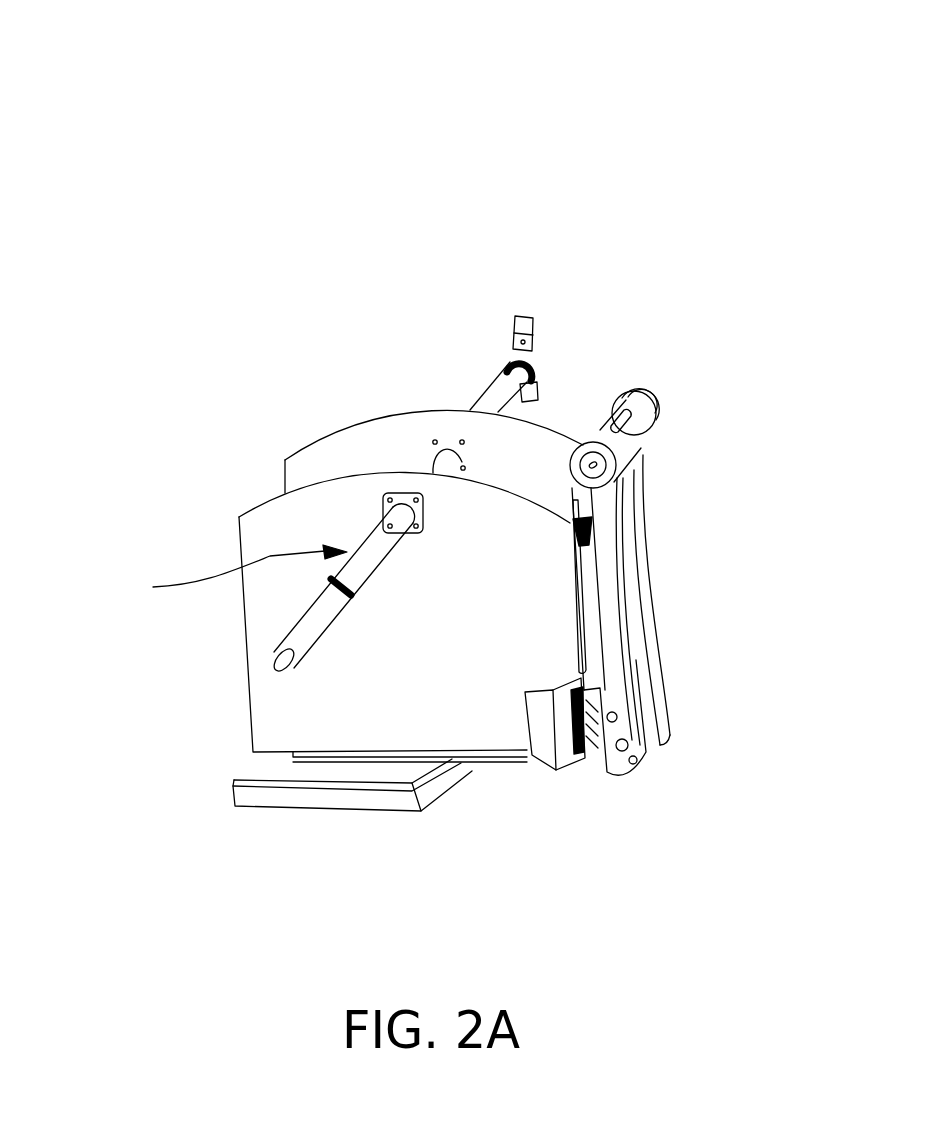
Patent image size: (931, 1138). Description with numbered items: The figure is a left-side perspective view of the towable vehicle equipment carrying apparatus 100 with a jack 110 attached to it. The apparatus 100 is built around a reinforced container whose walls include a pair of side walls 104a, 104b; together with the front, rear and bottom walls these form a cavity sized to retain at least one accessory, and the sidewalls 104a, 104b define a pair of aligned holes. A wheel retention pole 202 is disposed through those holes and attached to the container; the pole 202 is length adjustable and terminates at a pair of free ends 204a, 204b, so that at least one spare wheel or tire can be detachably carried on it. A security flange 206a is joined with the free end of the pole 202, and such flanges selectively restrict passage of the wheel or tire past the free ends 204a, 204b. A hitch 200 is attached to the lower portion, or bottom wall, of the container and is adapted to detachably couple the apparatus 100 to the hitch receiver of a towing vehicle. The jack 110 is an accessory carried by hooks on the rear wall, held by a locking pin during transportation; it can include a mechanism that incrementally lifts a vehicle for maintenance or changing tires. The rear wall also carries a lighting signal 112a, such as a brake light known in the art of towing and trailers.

The towable vehicle equipment carrying apparatus 100 is at (187, 177).
The side wall 104a is at (298, 512).
The side wall 104b is at (348, 450).
The jack 110 is at (662, 387).
The lighting signal 112a is at (563, 740).
The hitch 200 is at (333, 812).
The wheel retention pole 202 is at (223, 574).
The free end 204a is at (297, 643).
The free end 204b is at (498, 392).
The security flange 206a is at (528, 317).